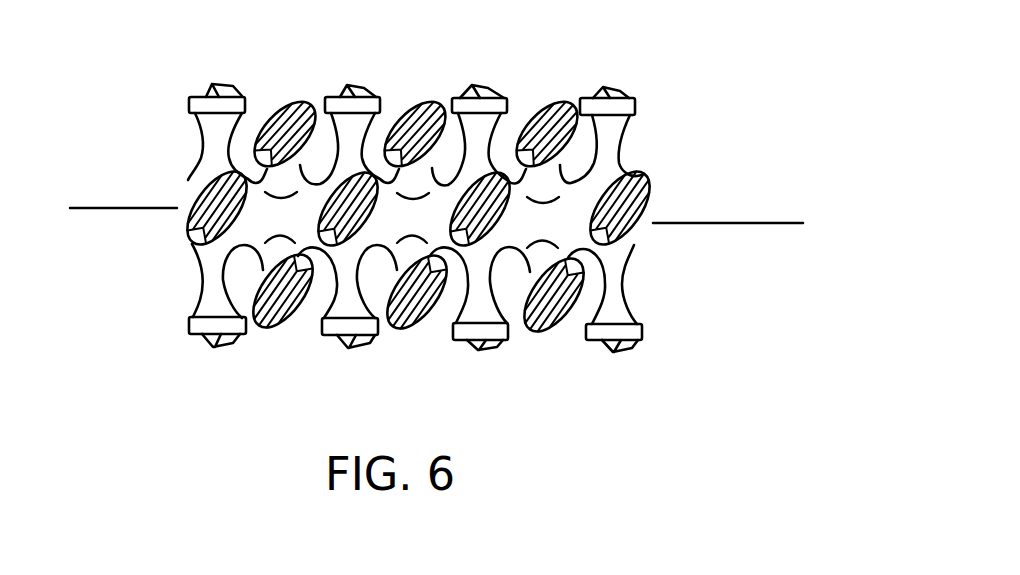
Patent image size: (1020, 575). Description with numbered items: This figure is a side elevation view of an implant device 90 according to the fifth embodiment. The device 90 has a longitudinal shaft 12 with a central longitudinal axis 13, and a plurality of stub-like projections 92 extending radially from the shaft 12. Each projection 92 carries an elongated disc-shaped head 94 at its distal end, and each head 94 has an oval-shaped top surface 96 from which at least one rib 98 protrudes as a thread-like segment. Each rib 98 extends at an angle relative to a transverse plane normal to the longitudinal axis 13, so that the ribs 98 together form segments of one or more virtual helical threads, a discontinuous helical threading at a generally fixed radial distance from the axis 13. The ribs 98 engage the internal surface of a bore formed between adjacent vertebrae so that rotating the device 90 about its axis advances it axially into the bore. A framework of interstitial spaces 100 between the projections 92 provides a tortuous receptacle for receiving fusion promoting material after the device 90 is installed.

The implant device 90 is at (676, 125).
The stub-like projections 92 is at (213, 291).
The elongated disc-shaped head 94 is at (630, 330).
The oval-shaped top surface 96 is at (295, 298).
The rib 98 is at (360, 90).
The interstitial spaces 100 is at (506, 148).
The longitudinal shaft 12 is at (578, 206).
The longitudinal axis 13 is at (750, 223).